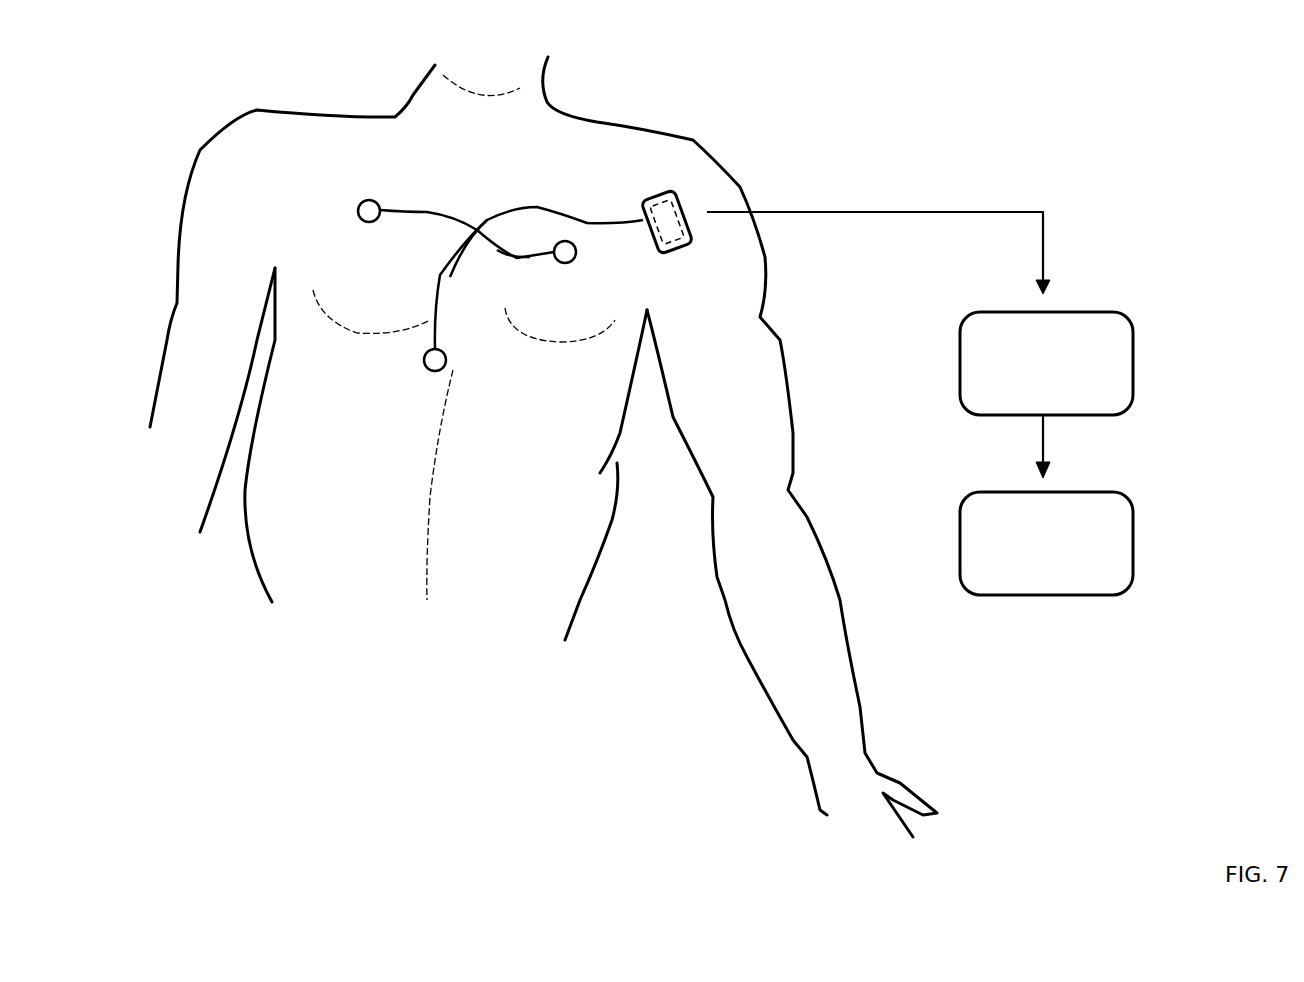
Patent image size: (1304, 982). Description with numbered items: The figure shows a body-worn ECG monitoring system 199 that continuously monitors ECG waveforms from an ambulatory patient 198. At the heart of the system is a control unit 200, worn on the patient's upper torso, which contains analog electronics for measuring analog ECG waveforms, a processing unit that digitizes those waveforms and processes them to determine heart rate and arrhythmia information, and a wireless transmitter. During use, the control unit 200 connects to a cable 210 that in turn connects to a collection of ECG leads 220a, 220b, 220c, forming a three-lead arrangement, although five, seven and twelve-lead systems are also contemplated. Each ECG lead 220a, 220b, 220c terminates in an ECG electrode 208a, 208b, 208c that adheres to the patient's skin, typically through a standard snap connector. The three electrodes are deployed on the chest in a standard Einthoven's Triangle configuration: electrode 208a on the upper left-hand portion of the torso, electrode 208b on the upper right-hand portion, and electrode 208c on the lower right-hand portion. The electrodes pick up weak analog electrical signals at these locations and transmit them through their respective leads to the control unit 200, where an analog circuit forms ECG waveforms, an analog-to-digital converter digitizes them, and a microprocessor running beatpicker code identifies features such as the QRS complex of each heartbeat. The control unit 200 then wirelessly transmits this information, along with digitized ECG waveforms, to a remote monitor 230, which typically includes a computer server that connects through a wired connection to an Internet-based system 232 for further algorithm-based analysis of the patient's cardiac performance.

The ambulatory patient 198 is at (638, 128).
The body-worn ECG monitoring system 199 is at (317, 170).
The control unit 200 is at (662, 200).
The ECG electrode 208a is at (618, 254).
The ECG electrode 208b is at (357, 206).
The ECG electrode 208c is at (434, 372).
The cable 210 is at (555, 205).
The ECG lead 220a is at (522, 259).
The ECG lead 220b is at (428, 205).
The ECG lead 220c is at (462, 262).
The remote wireless monitor 230 is at (1136, 358).
The Internet-based system 232 is at (1136, 546).